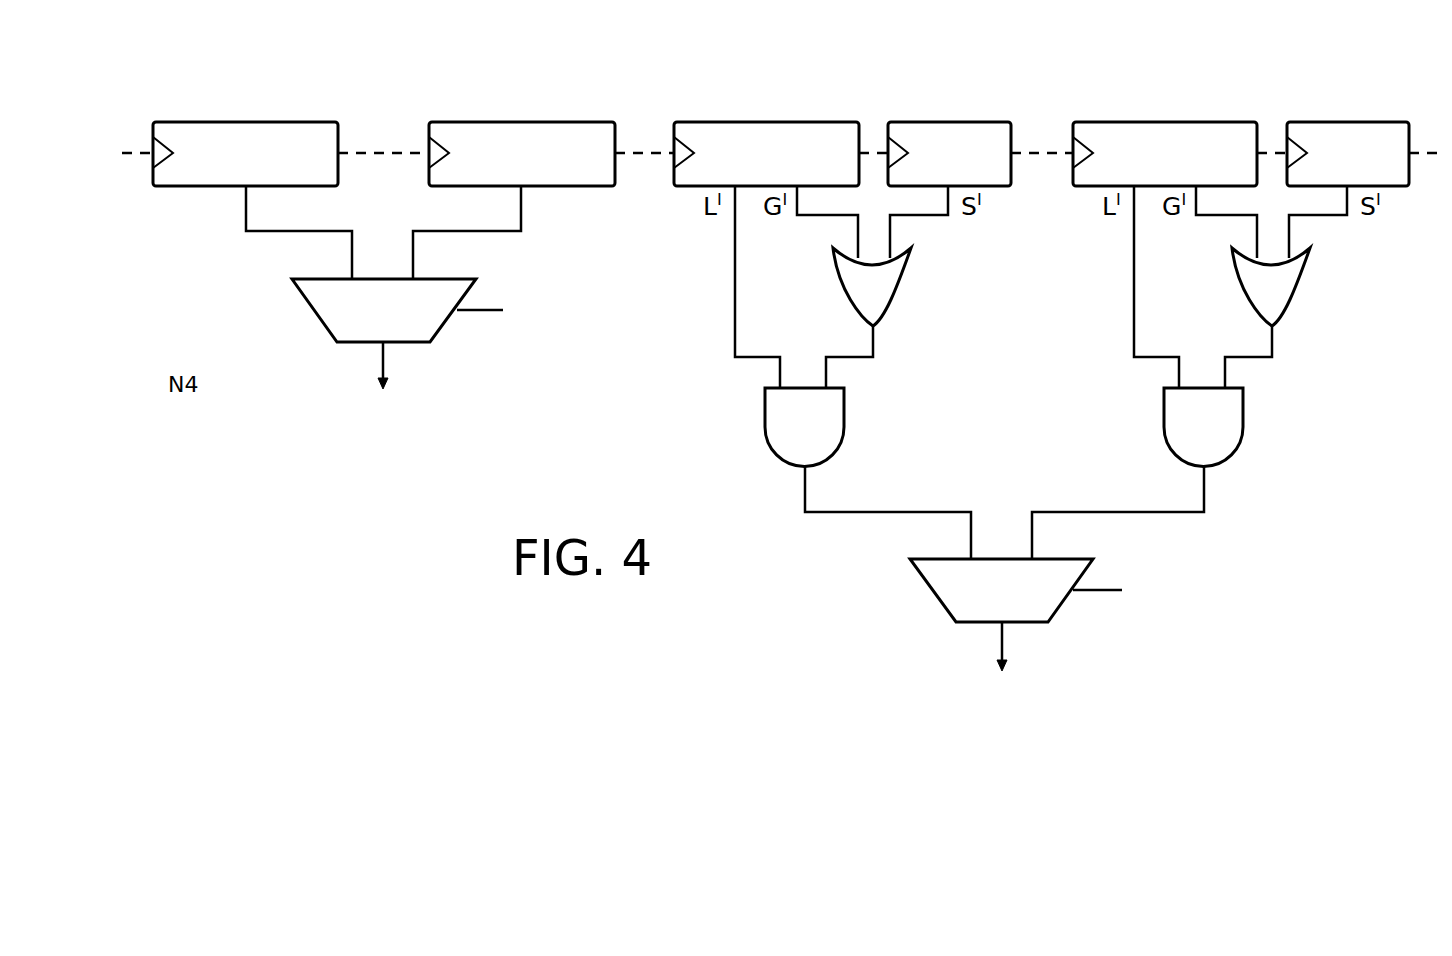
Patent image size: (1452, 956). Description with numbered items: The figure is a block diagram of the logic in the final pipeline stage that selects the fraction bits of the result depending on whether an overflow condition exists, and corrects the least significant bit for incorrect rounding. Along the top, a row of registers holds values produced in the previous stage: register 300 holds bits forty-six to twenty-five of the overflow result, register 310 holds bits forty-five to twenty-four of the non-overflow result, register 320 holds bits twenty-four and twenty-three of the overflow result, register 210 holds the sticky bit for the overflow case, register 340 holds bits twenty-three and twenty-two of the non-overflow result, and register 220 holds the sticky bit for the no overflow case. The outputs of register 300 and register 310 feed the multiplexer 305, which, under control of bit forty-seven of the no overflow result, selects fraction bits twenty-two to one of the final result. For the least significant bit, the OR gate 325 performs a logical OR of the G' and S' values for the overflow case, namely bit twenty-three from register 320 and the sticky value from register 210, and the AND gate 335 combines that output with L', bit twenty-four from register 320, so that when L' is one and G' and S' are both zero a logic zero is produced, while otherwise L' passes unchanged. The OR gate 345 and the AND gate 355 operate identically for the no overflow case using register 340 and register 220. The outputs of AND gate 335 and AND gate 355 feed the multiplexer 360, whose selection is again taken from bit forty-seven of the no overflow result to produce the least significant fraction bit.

The register 300 is at (303, 122).
The register 310 is at (578, 122).
The register 320 is at (824, 122).
The register 210 is at (976, 122).
The register 340 is at (1222, 122).
The register 220 is at (1375, 122).
The multiplexer 305 is at (303, 297).
The OR gate 325 is at (908, 282).
The AND gate 335 is at (845, 405).
The OR gate 345 is at (1307, 282).
The AND gate 355 is at (1244, 405).
The multiplexer 360 is at (921, 578).